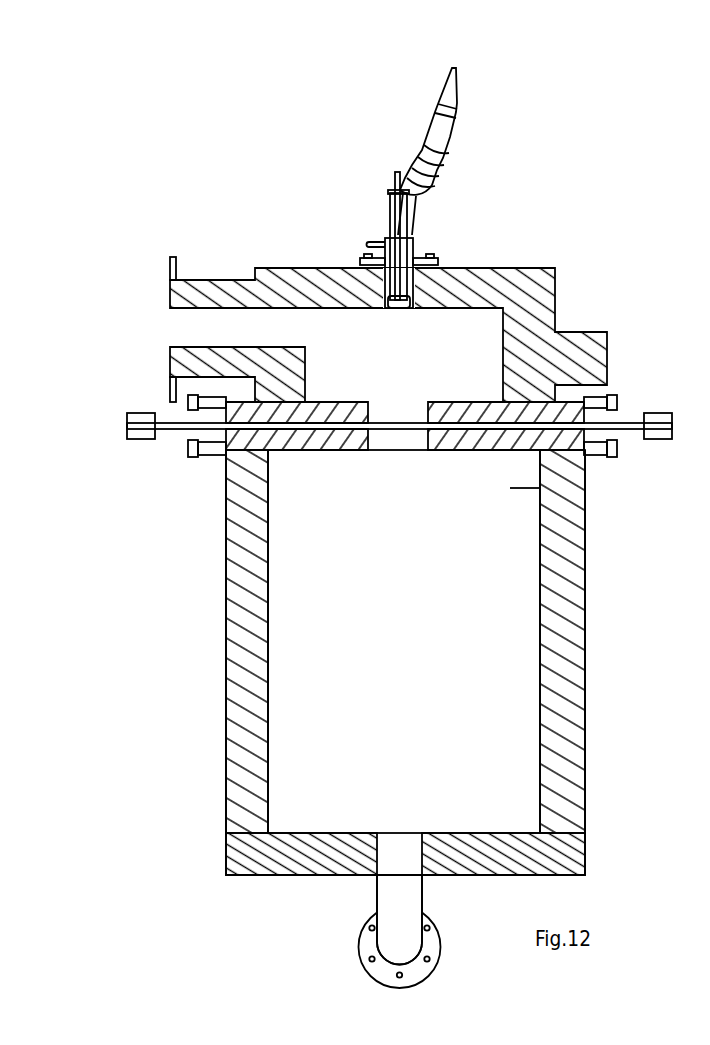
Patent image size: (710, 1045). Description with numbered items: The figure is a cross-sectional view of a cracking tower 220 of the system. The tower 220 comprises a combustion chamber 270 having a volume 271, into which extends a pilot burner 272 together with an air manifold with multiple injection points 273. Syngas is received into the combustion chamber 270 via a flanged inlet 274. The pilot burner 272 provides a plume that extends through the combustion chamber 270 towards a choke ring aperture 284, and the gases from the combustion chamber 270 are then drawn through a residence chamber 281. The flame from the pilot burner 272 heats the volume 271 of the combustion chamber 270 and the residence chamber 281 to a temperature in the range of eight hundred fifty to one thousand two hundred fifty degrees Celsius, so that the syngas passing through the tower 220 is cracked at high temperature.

The tower 220 is at (412, 528).
The combustion chamber 270 is at (382, 235).
The volume 271 is at (412, 372).
The pilot burner 272 is at (432, 262).
The air manifold with multiple injection points 273 is at (617, 438).
The flanged inlet 274 is at (204, 296).
The residence chamber 281 is at (400, 662).
The choke ring aperture 284 is at (400, 438).